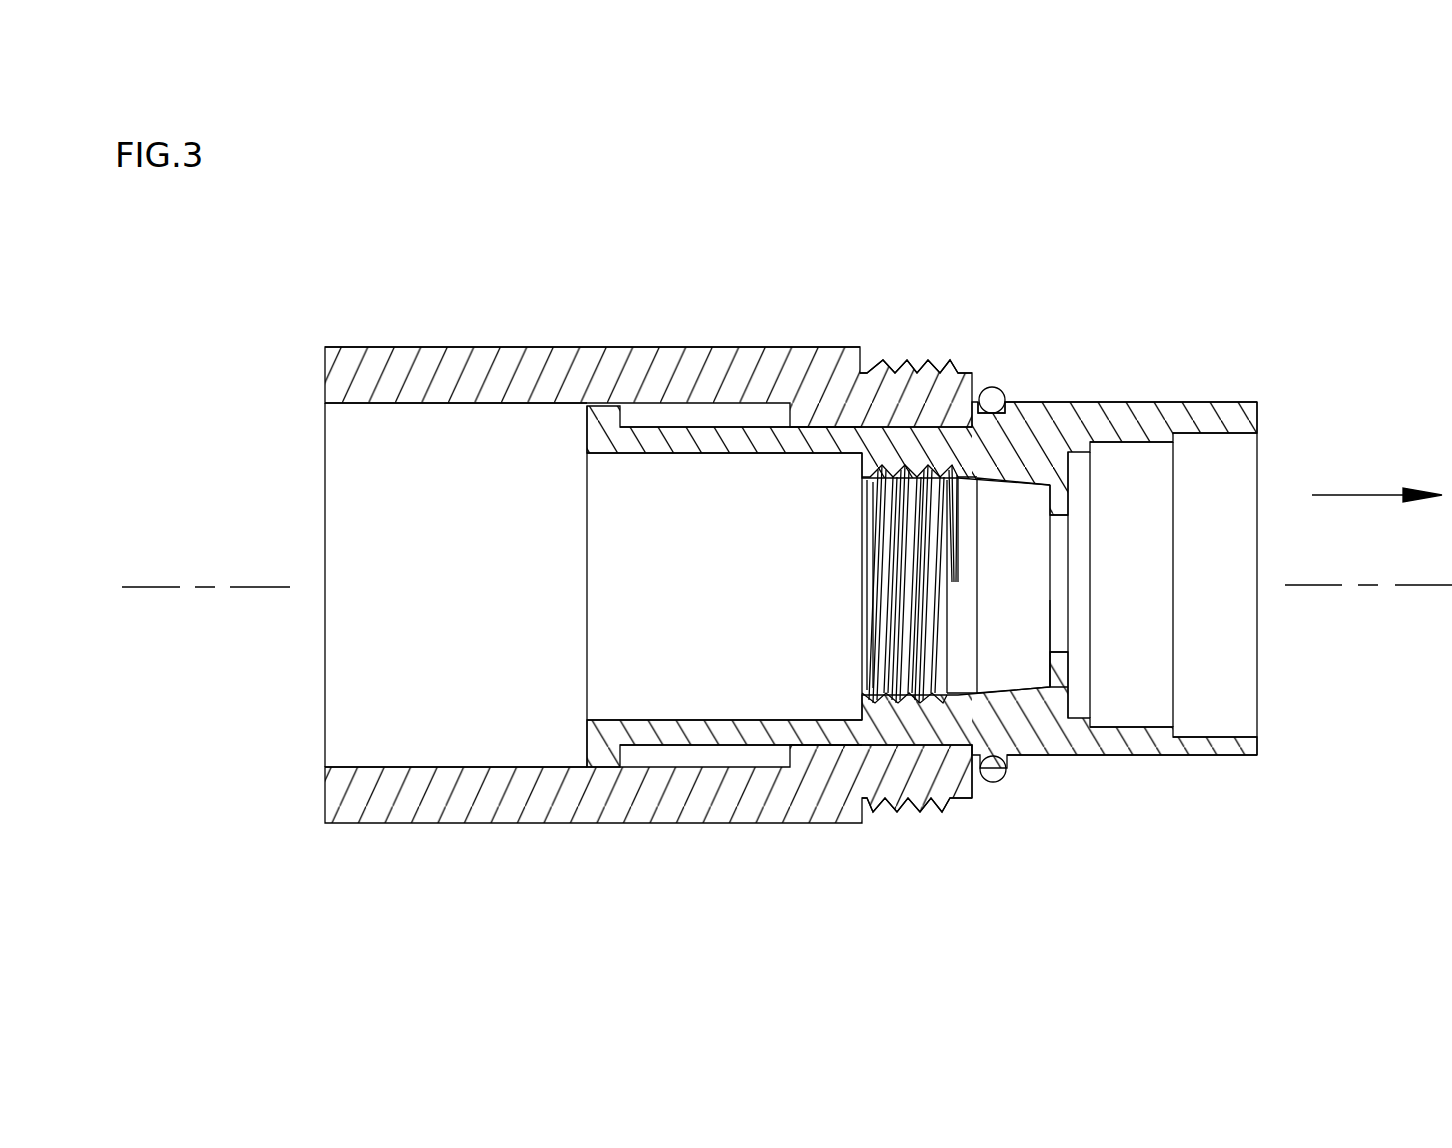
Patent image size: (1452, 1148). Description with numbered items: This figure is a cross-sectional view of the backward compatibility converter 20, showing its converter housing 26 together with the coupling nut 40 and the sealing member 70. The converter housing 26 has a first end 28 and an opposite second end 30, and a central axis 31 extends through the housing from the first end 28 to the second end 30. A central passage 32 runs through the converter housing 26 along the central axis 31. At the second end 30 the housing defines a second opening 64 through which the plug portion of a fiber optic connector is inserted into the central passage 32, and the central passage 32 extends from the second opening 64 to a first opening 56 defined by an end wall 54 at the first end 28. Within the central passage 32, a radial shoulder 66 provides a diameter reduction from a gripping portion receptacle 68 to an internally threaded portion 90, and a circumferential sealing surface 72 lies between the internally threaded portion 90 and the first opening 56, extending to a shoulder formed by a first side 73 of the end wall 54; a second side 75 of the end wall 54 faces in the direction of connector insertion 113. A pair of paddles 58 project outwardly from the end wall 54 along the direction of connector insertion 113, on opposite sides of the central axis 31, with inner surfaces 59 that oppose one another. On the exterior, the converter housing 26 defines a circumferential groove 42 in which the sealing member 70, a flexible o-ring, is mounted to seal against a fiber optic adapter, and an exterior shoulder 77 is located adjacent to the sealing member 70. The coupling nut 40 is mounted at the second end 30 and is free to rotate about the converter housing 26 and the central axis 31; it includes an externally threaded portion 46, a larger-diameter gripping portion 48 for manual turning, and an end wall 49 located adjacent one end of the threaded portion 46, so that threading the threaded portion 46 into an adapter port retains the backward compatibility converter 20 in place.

The backward compatibility converter 20 is at (701, 298).
The converter housing 26 is at (1050, 400).
The first end 28 is at (1240, 400).
The second end 30 is at (585, 433).
The central axis 31 is at (168, 588).
The central passage 32 is at (653, 718).
The coupling nut 40 is at (430, 347).
The circumferential groove 42 is at (997, 752).
The externally threaded portion 46 is at (915, 370).
The gripping portion 48 is at (533, 355).
The end wall of the coupling nut 49 is at (988, 392).
The end wall 54 is at (1078, 498).
The first opening 56 is at (1055, 517).
The paddles 58 is at (1163, 400).
The inner surfaces 59 is at (1207, 436).
The second opening 64 is at (585, 453).
The radial shoulder 66 is at (858, 458).
The gripping portion receptacle 68 is at (676, 455).
The sealing member 70 is at (1000, 392).
The circumferential sealing surface 72 is at (1013, 485).
The first side of the end wall 73 is at (1050, 670).
The second side of the end wall 75 is at (1068, 672).
The exterior shoulder 77 is at (955, 752).
The internally threaded portion 90 is at (897, 479).
The direction of connector insertion 113 is at (1342, 495).